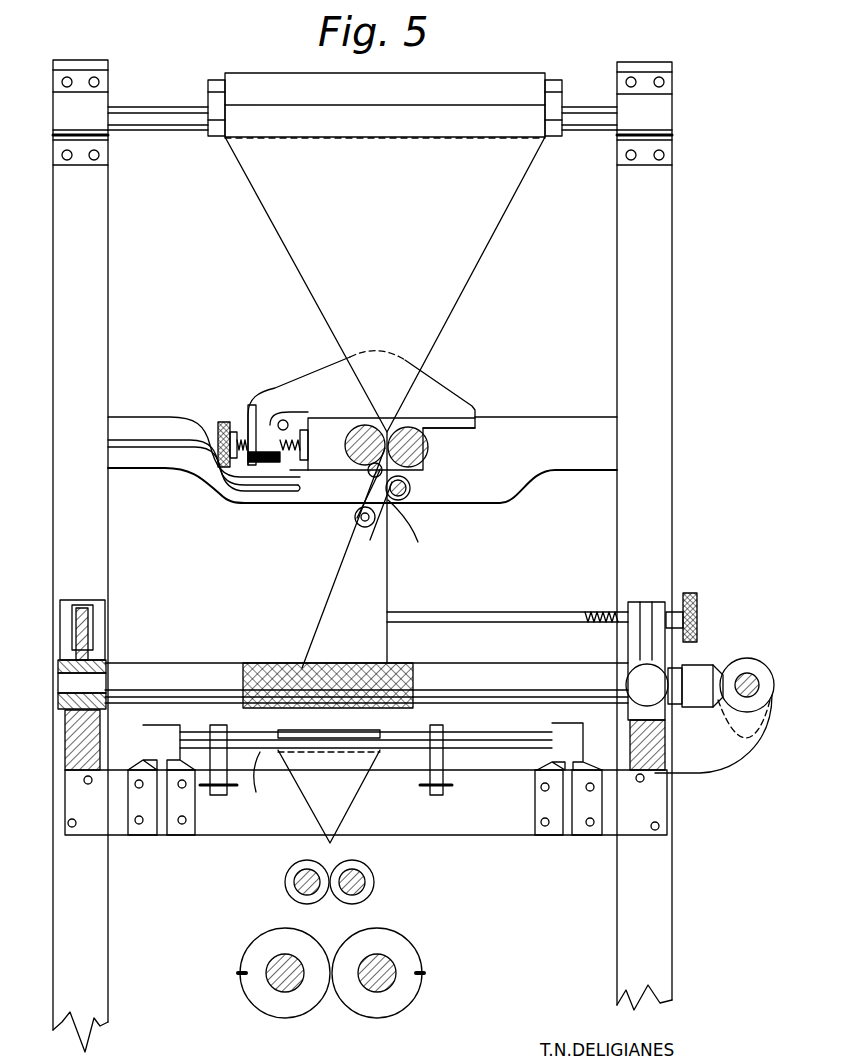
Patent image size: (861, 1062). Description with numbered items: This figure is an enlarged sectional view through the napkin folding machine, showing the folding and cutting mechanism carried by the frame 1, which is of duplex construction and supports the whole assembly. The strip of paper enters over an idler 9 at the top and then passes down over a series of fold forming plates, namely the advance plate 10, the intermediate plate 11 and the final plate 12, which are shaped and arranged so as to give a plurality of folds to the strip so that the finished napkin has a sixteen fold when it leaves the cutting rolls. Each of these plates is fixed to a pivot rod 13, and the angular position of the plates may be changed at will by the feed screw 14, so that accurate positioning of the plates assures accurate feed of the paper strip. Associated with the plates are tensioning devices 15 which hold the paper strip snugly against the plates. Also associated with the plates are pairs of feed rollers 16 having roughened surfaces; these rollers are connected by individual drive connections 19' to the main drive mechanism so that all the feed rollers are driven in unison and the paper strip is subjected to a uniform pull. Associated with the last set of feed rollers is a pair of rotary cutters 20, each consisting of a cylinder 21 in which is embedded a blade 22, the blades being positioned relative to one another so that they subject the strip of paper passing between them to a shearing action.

The frame 1 is at (100, 522).
The idler 9 is at (490, 90).
The advance plate 10 is at (385, 400).
The intermediate plate 11 is at (358, 586).
The final plate 12 is at (366, 753).
The pivot rod 13 is at (575, 118).
The feed screw 14 is at (515, 608).
The tensioning device 15 is at (397, 498).
The feed rollers 16 is at (430, 420).
The individual drive connection 19' is at (701, 683).
The rotary cutter 20 is at (390, 950).
The cylinder 21 is at (285, 1005).
The blade 22 is at (237, 973).